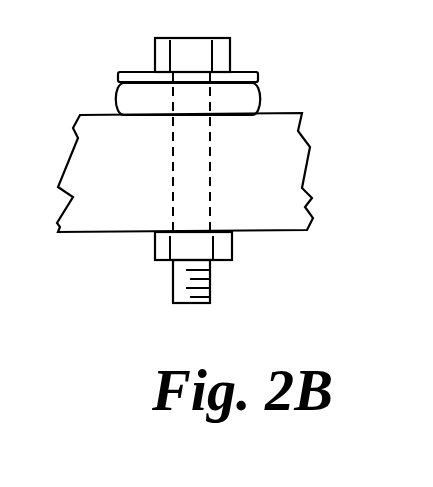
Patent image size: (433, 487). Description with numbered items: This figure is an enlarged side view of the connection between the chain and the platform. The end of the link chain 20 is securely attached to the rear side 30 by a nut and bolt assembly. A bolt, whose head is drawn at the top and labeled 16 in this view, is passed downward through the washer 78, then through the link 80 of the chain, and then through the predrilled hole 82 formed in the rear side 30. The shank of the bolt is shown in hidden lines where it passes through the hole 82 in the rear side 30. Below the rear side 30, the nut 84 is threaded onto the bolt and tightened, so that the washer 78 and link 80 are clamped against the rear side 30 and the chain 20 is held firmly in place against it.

The bolt 16 is at (217, 151).
The link chain 20 is at (198, 66).
The rear side 30 is at (268, 232).
The washer 78 is at (257, 72).
The link 80 is at (257, 96).
The predrilled hole 82 is at (210, 188).
The nut 84 is at (155, 242).